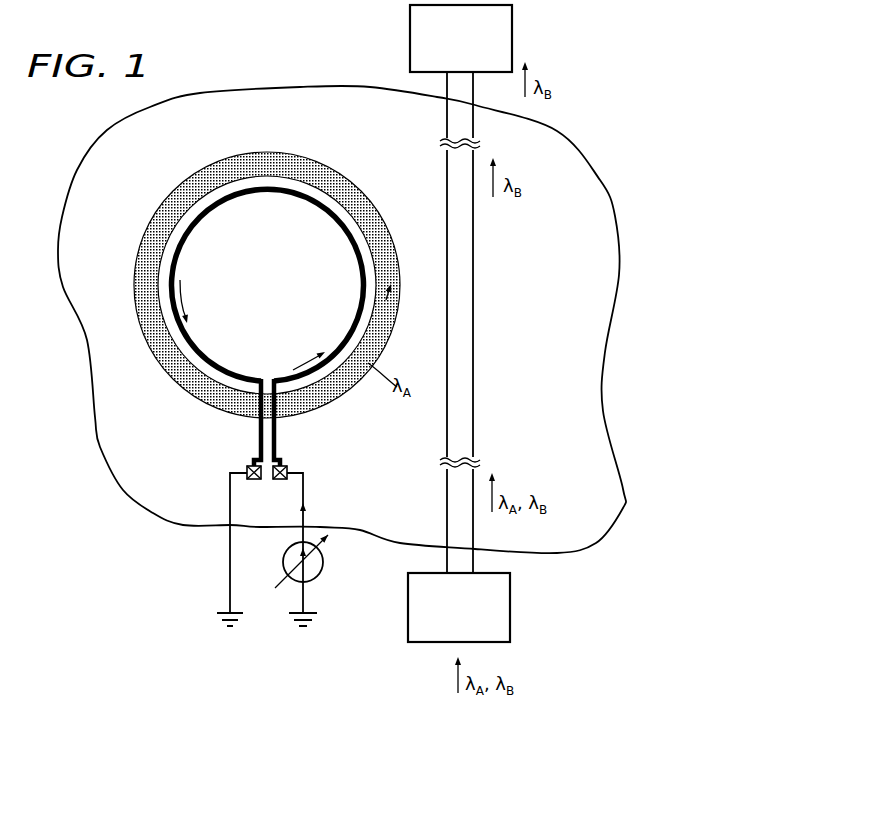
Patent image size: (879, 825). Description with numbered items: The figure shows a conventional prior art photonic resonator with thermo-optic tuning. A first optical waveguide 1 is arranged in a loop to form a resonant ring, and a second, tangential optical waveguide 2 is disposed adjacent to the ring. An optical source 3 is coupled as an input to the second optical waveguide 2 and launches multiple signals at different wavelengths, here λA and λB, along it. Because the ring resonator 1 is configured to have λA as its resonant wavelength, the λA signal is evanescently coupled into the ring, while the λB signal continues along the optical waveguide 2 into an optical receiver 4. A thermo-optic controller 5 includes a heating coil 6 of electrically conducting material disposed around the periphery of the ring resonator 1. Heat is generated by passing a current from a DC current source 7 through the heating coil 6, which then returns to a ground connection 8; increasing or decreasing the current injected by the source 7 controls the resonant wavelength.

The first optical waveguide 1 is at (160, 210).
The second optical waveguide 2 is at (474, 294).
The optical source 3 is at (510, 608).
The optical receiver 4 is at (410, 34).
The thermo-optic controller 5 is at (303, 523).
The heating coil 6 is at (239, 188).
The DC current source 7 is at (323, 562).
The ground connection 8 is at (218, 615).